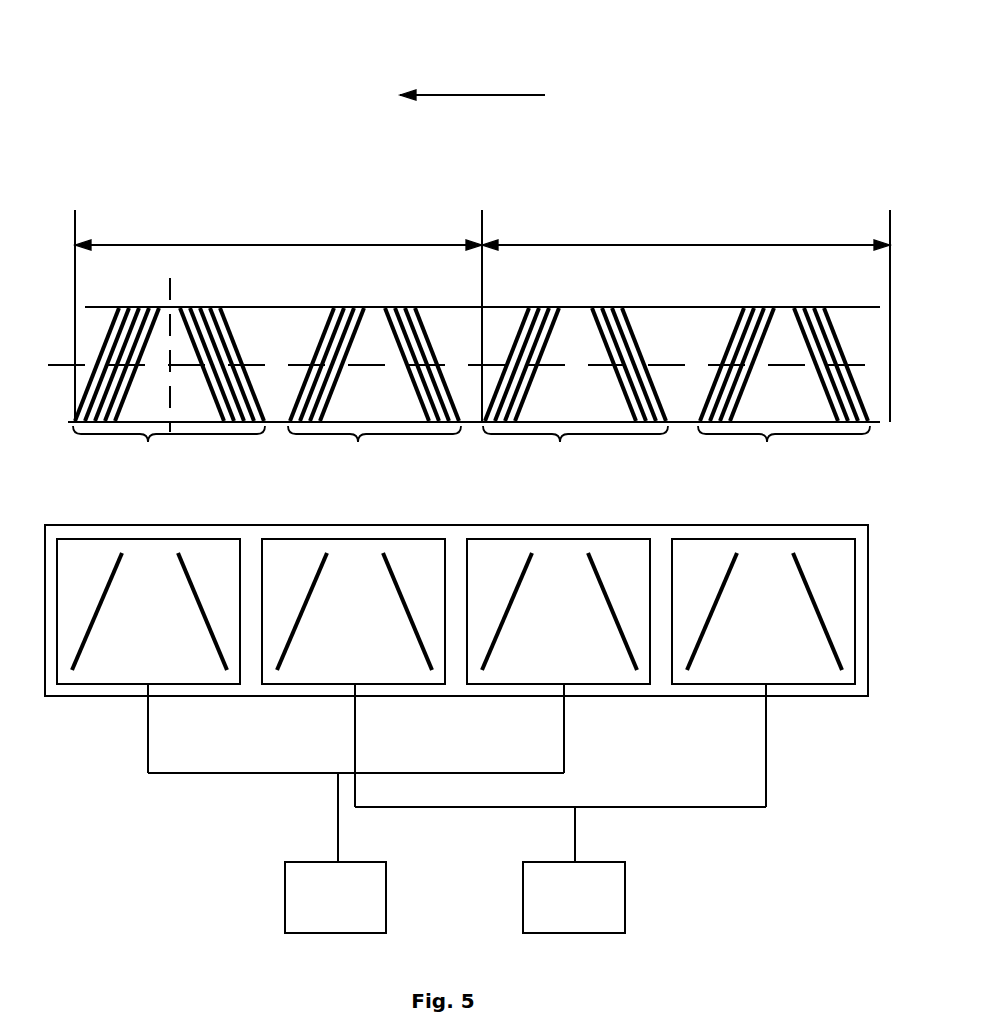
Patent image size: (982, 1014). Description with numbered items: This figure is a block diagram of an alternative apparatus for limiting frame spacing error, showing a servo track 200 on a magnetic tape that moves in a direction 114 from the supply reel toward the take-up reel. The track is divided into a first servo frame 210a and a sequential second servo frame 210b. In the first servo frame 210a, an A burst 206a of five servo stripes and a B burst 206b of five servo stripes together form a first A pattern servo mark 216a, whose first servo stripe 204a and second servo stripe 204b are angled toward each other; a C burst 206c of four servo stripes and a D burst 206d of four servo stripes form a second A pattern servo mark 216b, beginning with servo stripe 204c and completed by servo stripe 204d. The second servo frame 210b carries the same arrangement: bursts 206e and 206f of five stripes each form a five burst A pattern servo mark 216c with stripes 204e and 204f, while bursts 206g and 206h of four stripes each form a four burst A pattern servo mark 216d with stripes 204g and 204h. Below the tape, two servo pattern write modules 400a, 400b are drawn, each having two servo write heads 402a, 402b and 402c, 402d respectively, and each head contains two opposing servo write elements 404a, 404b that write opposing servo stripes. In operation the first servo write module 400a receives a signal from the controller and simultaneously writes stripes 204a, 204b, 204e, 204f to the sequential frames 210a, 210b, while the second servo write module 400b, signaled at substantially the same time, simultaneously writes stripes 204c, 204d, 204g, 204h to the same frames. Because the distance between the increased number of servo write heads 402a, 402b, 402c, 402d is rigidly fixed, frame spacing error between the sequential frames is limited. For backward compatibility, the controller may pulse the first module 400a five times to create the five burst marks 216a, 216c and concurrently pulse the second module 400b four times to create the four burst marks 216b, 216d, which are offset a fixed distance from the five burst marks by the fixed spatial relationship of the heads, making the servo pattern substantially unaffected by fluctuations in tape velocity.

The servo track 200 is at (92, 143).
The direction 114 is at (473, 95).
The first servo frame 210a is at (264, 245).
The second servo frame 210b is at (671, 245).
The "A" burst 206a is at (117, 306).
The "B" burst 206b is at (178, 306).
The "C" burst 206c is at (366, 306).
The "D" burst 206d is at (383, 306).
The first servo burst of second frame 206e is at (527, 306).
The second servo burst of second frame 206f is at (590, 306).
The third servo burst of second frame 206g is at (776, 306).
The fourth servo burst of second frame 206h is at (792, 306).
The first servo stripe 204a is at (77, 419).
The second servo stripe 204b is at (222, 419).
The first servo stripe of second A pattern servo mark 204c is at (289, 419).
The servo stripe 204d is at (428, 419).
The servo stripe 204e is at (484, 419).
The servo stripe 204f is at (634, 419).
The servo stripe 204g is at (699, 419).
The servo stripe 204h is at (837, 419).
The first "A" pattern servo mark 216a is at (169, 448).
The second "A" pattern servo mark 216b is at (374, 448).
The five burst "A" servo pattern mark 216c is at (575, 449).
The four burst "A" servo pattern mark 216d is at (784, 449).
The servo write head 402a is at (147, 539).
The servo write head 402b is at (557, 539).
The servo write head 402c is at (352, 539).
The servo write head 402d is at (761, 539).
The servo write element 404a is at (90, 637).
The servo write element 404b is at (212, 637).
The first servo write module 400a is at (335, 853).
The second servo write module 400b is at (574, 870).